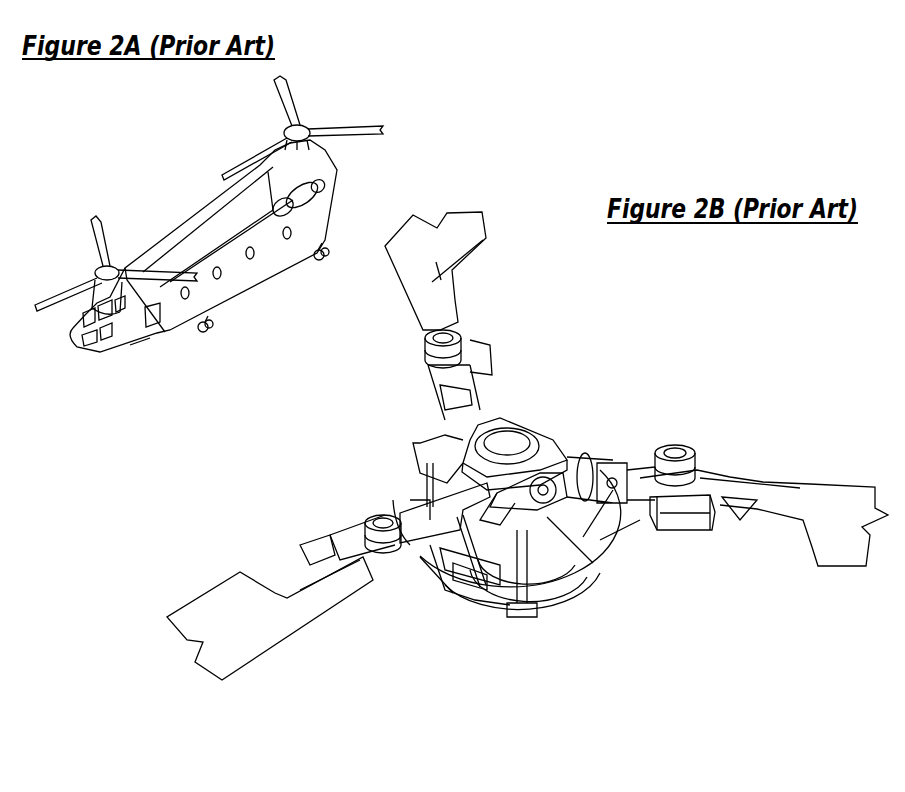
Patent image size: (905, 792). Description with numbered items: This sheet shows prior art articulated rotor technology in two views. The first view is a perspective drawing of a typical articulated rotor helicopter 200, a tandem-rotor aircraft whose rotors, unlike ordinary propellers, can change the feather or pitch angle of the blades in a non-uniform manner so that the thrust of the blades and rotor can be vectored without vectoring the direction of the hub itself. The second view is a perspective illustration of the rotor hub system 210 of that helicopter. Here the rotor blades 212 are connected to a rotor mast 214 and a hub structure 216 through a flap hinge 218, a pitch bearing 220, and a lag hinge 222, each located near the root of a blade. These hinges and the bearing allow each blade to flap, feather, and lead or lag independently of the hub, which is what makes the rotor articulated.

In FIG. 2A, the articulated rotor helicopter 200 is at (183, 198).
In FIG. 2A, the rotor hub system 210 is at (308, 116).
In FIG. 2B, the rotor hub system 210 is at (527, 474).
In FIG. 2B, the rotor blades 212 is at (257, 657).
In FIG. 2B, the rotor mast 214 is at (510, 430).
In FIG. 2B, the hub structure 216 is at (545, 430).
In FIG. 2B, the flap hinge 218 is at (583, 537).
In FIG. 2B, the pitch bearing 220 is at (457, 597).
In FIG. 2B, the lag hinge 222 is at (390, 597).